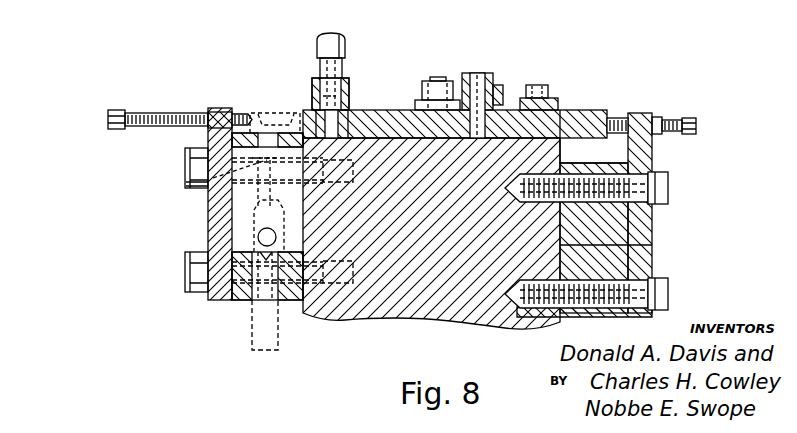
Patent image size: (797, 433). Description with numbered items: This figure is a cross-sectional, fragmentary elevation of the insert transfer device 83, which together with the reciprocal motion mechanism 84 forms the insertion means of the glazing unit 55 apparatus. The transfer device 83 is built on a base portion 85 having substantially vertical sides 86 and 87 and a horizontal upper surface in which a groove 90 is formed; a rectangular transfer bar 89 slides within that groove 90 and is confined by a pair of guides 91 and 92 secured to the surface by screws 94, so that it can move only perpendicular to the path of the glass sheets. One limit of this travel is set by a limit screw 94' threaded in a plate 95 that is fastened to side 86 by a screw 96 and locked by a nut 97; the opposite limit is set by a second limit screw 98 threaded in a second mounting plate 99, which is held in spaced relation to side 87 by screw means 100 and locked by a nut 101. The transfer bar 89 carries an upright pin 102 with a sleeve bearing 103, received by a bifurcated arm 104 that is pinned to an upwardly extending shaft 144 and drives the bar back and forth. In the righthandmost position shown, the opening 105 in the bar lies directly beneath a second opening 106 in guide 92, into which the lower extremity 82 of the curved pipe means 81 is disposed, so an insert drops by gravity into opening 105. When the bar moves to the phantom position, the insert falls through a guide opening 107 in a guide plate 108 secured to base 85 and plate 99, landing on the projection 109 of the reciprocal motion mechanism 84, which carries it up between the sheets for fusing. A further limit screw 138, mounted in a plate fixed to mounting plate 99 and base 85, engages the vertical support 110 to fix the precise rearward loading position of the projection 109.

The valve assembly 55 is at (268, 69).
The curved pipe means 81 is at (336, 31).
The lower extremity of the pipe 82 is at (343, 75).
The insert transfer device 83 is at (518, 90).
The reciprocal motion mechanism 84 is at (217, 310).
The base portion 85 is at (381, 314).
The vertical side 86 is at (648, 246).
The vertical side 87 is at (393, 110).
The transfer bar 89 is at (583, 130).
The groove 90 is at (575, 118).
The guide 91 is at (316, 84).
The guide 92 is at (566, 112).
The screws 94 is at (558, 79).
The limit screw 94' is at (714, 115).
The plate 95 is at (632, 221).
The screw 96 is at (662, 186).
The nut 97 is at (653, 117).
The second limit screw 98 is at (114, 111).
The second mounting plate 99 is at (218, 200).
The screw means 100 is at (190, 158).
The nut 101 is at (206, 112).
The upright pin 102 is at (479, 74).
The sleeve bearing 103 is at (494, 86).
The bifurcated arm 104 is at (424, 82).
The opening 105 is at (328, 122).
The second opening 106 is at (342, 93).
The guide opening 107 is at (232, 140).
The guide plate 108 is at (262, 136).
The projection 109 is at (200, 185).
The vertical support 110 is at (262, 320).
The limit screw 138 is at (258, 237).
The shaft 144 is at (446, 77).